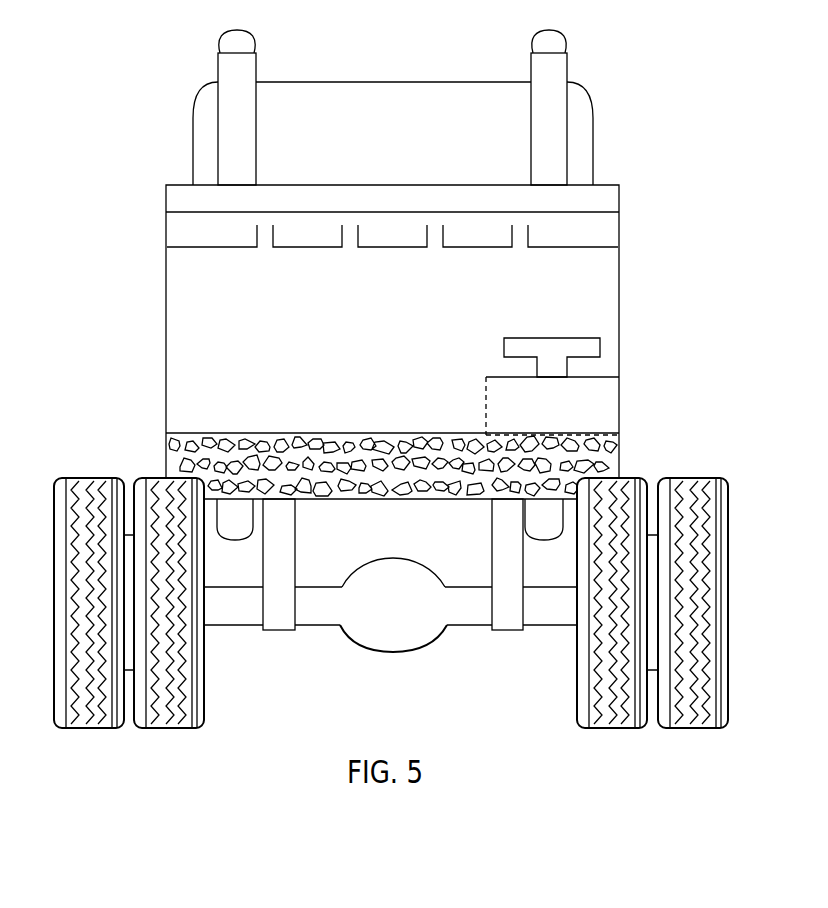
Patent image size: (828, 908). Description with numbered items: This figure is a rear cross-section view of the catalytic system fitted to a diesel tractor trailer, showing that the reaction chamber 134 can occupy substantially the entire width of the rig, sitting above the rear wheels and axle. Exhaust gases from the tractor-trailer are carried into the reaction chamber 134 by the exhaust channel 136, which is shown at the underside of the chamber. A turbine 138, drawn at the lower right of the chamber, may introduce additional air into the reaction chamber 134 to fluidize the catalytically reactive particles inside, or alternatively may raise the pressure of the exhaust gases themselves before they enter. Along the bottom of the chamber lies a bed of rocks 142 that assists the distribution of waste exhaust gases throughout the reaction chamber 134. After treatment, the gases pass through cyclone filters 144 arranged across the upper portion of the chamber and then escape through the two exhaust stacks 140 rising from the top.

The reaction chamber 134 is at (400, 348).
The exhaust channel 136 is at (243, 523).
The turbine 138 is at (566, 424).
The exhaust stack 140 is at (247, 65).
The bed of rocks 142 is at (617, 455).
The cyclone filters 144 is at (597, 233).